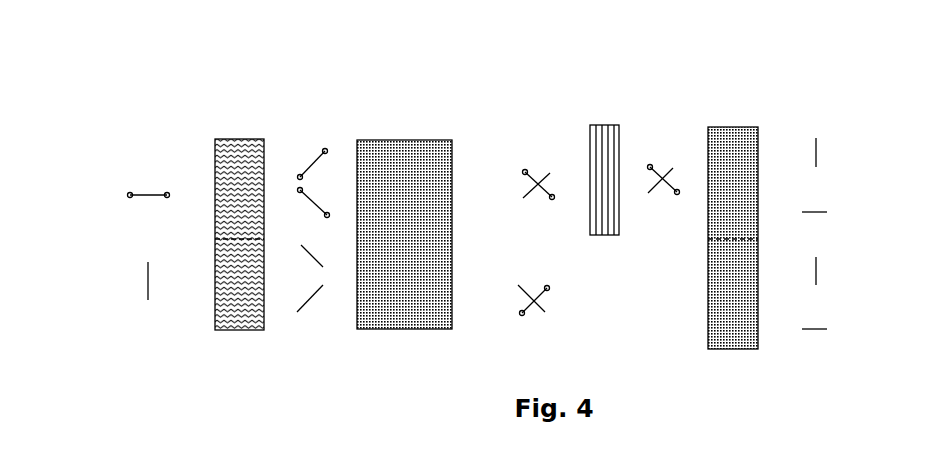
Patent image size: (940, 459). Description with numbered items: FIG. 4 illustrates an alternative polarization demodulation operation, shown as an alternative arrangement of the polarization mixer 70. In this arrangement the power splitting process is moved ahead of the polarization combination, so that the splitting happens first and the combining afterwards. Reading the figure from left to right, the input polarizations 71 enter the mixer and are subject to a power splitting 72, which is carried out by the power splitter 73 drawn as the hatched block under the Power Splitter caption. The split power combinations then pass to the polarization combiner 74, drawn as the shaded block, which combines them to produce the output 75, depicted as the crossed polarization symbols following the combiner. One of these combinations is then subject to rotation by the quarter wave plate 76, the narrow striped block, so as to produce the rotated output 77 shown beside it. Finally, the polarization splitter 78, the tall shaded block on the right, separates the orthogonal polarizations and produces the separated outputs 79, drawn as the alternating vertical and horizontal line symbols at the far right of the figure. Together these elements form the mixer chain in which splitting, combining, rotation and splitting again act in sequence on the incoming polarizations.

The alternative arrangement of the polarization mixer 70 is at (825, 89).
The input polarizations 71 is at (134, 320).
The power splitting 72 is at (305, 324).
The power splitter 73 is at (247, 330).
The polarization combiner 74 is at (402, 329).
The output 75 is at (518, 327).
The quarter wave plate 76 is at (603, 235).
The output 77 is at (661, 207).
The polarization splitter 78 is at (743, 349).
The separated outputs 79 is at (817, 346).